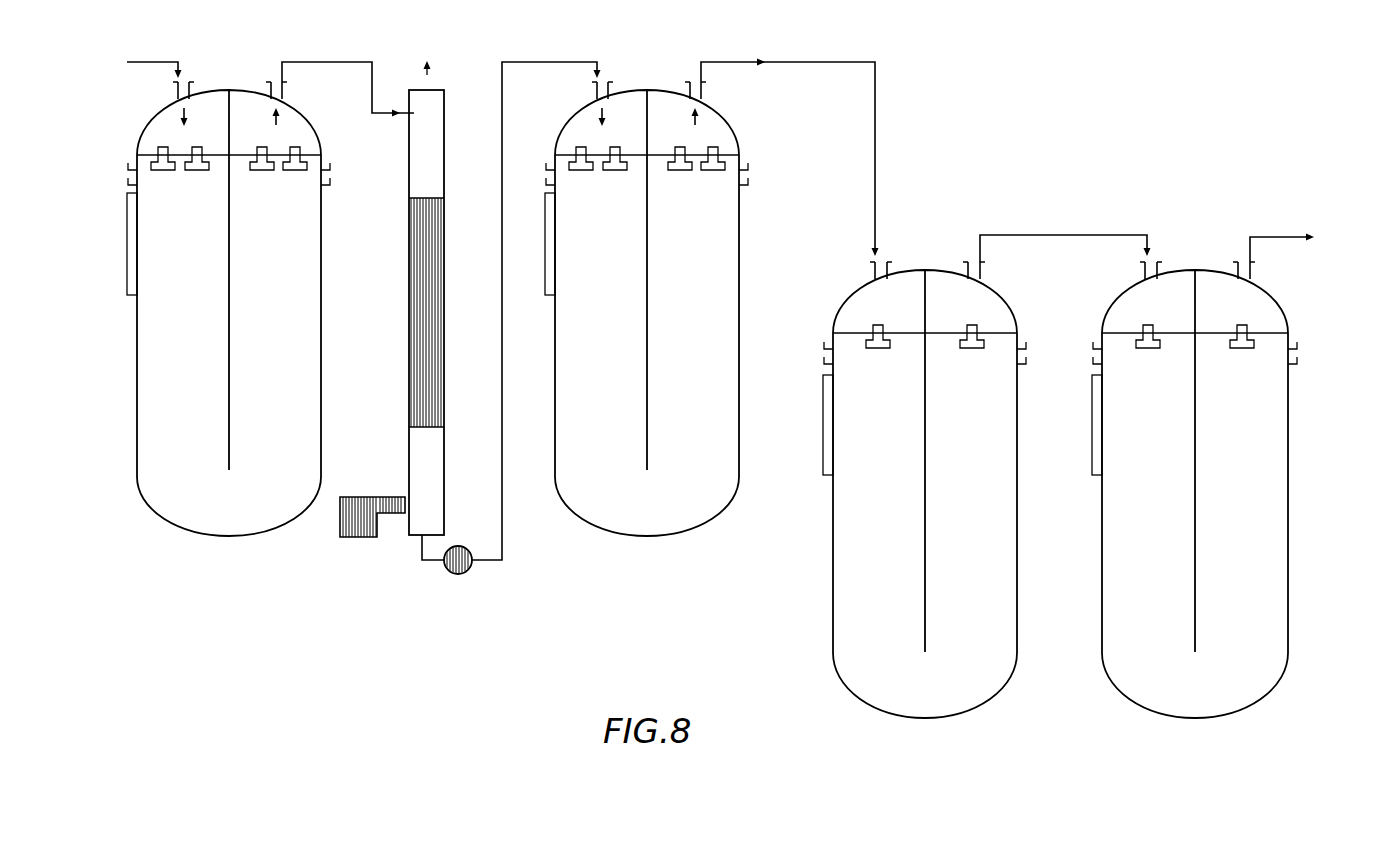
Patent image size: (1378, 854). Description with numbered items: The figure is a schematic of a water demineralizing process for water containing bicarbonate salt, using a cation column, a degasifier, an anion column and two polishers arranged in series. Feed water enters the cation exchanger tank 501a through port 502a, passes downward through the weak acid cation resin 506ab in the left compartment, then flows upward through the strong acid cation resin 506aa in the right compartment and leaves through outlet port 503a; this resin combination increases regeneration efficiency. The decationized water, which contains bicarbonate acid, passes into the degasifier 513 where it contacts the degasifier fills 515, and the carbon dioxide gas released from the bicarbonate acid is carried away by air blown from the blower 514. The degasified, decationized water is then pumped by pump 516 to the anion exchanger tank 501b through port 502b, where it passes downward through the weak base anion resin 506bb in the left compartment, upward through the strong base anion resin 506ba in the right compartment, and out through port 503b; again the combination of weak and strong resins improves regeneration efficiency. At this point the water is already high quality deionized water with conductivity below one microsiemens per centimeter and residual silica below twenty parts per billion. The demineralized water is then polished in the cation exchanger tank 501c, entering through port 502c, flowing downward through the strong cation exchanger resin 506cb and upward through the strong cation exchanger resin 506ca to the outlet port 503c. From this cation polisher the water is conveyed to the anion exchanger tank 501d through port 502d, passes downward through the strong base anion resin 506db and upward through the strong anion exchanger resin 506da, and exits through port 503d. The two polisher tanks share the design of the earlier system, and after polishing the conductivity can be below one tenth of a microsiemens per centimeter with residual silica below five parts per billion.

The cation exchanger tank 501a is at (321, 450).
The anion exchanger tank 501b is at (739, 449).
The cation exchanger tank 501c is at (1017, 631).
The anion exchanger tank 501d is at (1288, 634).
The port 502a is at (178, 87).
The port 502b is at (597, 87).
The port 502c is at (875, 266).
The port 502d is at (1145, 266).
The outlet port 503a is at (287, 90).
The port 503b is at (706, 89).
The port 503c is at (985, 267).
The port 503d is at (1255, 267).
The strong acid cation resin 506aa is at (303, 366).
The weak acid cation resin 506ab is at (203, 366).
The strong base anion resin 506ba is at (722, 364).
The weak base anion resin 506bb is at (622, 364).
The strong cation exchanger resin 506ca is at (999, 546).
The strong cation exchanger resin 506cb is at (899, 546).
The strong anion exchanger resin 506da is at (1270, 546).
The strong base anion resin 506db is at (1170, 546).
The degasifier 513 is at (409, 322).
The blower 514 is at (352, 538).
The degasifier fills 515 is at (409, 258).
The pump 516 is at (451, 575).